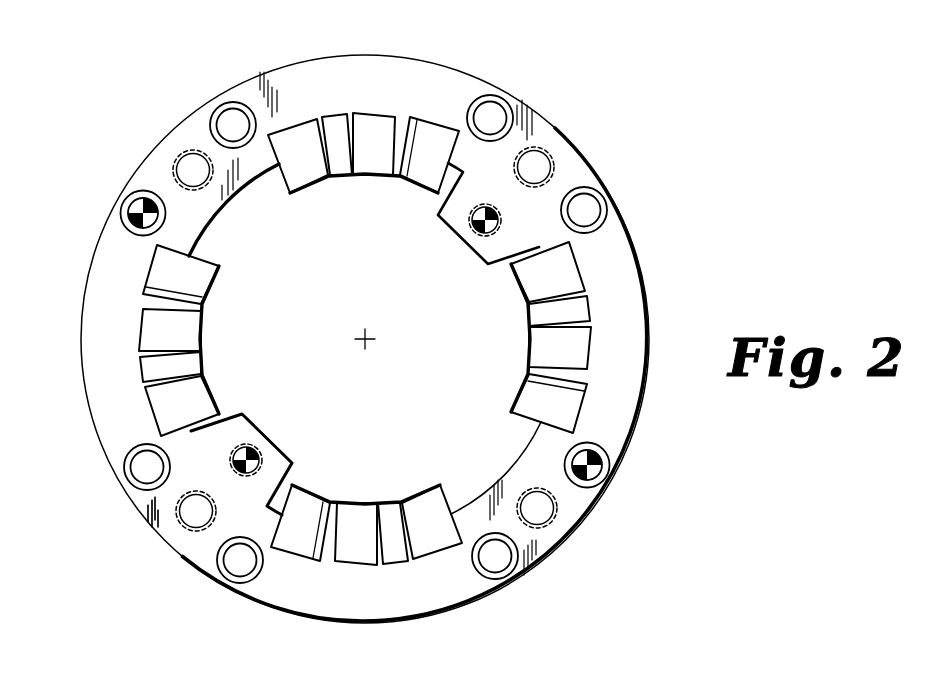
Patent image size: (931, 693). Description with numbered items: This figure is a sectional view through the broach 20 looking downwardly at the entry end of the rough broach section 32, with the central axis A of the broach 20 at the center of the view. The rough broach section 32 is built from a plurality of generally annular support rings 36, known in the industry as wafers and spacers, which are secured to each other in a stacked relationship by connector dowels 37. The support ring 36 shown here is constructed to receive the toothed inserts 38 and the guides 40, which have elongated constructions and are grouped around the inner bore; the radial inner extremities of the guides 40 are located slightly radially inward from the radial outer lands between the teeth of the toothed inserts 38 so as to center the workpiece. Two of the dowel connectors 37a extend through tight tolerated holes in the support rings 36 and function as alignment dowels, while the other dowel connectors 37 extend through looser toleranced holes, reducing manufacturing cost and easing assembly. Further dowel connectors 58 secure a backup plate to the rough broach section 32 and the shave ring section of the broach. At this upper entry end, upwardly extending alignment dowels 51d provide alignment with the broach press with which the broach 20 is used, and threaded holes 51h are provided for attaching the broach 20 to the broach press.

The broach 20 is at (580, 102).
The rough broach section 32 is at (651, 337).
The support rings 36 is at (635, 282).
The toothed inserts 38 is at (296, 137).
The guides 40 is at (416, 118).
The connector dowels 37 is at (513, 112).
The dowel connectors 37a is at (138, 207).
The threaded holes 51h is at (183, 152).
The alignment dowels 51d is at (480, 230).
The dowel connectors 58 is at (235, 101).
The central axis A is at (368, 336).